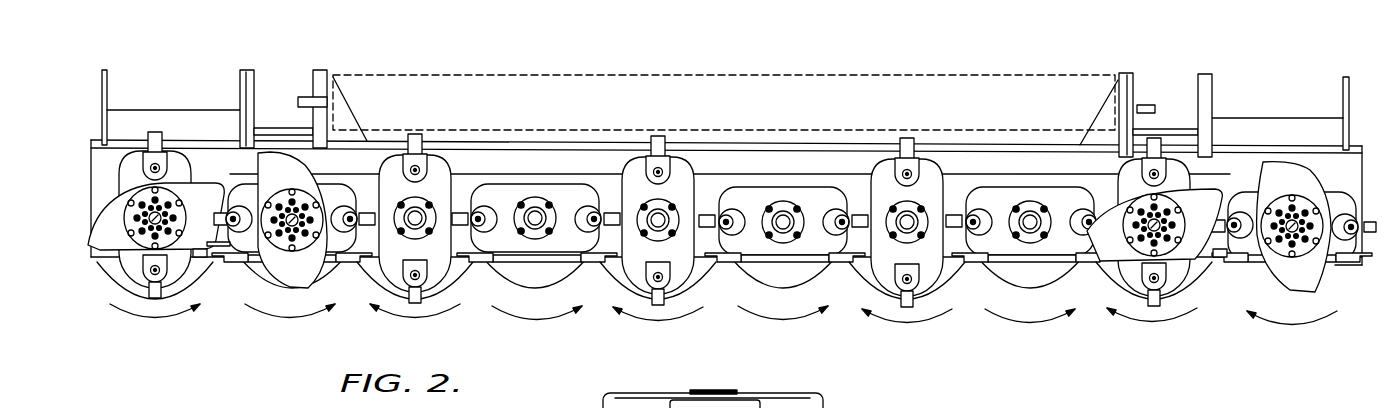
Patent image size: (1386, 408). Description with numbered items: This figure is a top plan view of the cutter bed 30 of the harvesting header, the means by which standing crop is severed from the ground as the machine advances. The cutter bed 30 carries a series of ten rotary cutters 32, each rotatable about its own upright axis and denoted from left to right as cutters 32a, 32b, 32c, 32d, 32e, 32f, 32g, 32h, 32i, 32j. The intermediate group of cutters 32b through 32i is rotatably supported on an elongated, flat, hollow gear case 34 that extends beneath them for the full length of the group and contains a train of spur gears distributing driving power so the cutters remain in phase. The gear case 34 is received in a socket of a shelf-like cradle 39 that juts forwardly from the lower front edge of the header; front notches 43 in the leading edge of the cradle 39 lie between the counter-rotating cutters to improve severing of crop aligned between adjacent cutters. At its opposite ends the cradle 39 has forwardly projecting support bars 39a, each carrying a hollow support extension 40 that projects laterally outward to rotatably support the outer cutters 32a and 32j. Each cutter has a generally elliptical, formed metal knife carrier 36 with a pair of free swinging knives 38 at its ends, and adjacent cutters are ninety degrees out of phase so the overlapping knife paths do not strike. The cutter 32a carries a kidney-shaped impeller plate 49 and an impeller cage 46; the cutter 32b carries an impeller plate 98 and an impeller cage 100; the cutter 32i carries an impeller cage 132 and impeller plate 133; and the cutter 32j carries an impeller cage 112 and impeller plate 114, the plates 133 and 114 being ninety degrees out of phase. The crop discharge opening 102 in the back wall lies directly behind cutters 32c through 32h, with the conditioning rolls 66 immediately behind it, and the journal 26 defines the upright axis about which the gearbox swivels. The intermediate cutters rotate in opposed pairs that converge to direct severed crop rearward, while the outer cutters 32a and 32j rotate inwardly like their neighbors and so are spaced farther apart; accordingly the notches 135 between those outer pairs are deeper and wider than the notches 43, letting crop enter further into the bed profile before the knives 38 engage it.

The journal 26 is at (712, 393).
The cutter bed 30 is at (887, 328).
The rotary cutters 32 is at (1355, 275).
The outer cutter 32a is at (1328, 198).
The intermediate cutter 32b is at (1173, 173).
The intermediate cutter 32c is at (1007, 193).
The intermediate cutter 32d is at (927, 175).
The intermediate cutter 32e is at (773, 192).
The intermediate cutter 32f is at (683, 212).
The intermediate cutter 32g is at (513, 192).
The intermediate cutter 32h is at (436, 207).
The intermediate cutter 32i is at (333, 190).
The outer cutter 32j is at (180, 167).
The gear case 34 is at (972, 165).
The knife carrier 36 is at (1290, 288).
The free swinging knives 38 is at (667, 302).
The cradle 39 is at (833, 165).
The support bars 39a is at (242, 255).
The support extensions 40 is at (108, 152).
The front notches 43 is at (600, 263).
The impeller cage 46 is at (725, 113).
The impeller plate 49 is at (1317, 288).
The conditioning rolls 66 is at (858, 85).
The impeller plate 98 is at (1220, 200).
The impeller cage 100 is at (1132, 265).
The crop discharge opening 102 is at (723, 138).
The impeller cage 112 is at (132, 255).
The impeller plate 114 is at (100, 240).
The impeller cage 132 is at (292, 258).
The impeller plate 133 is at (323, 273).
The notches 135 is at (223, 250).